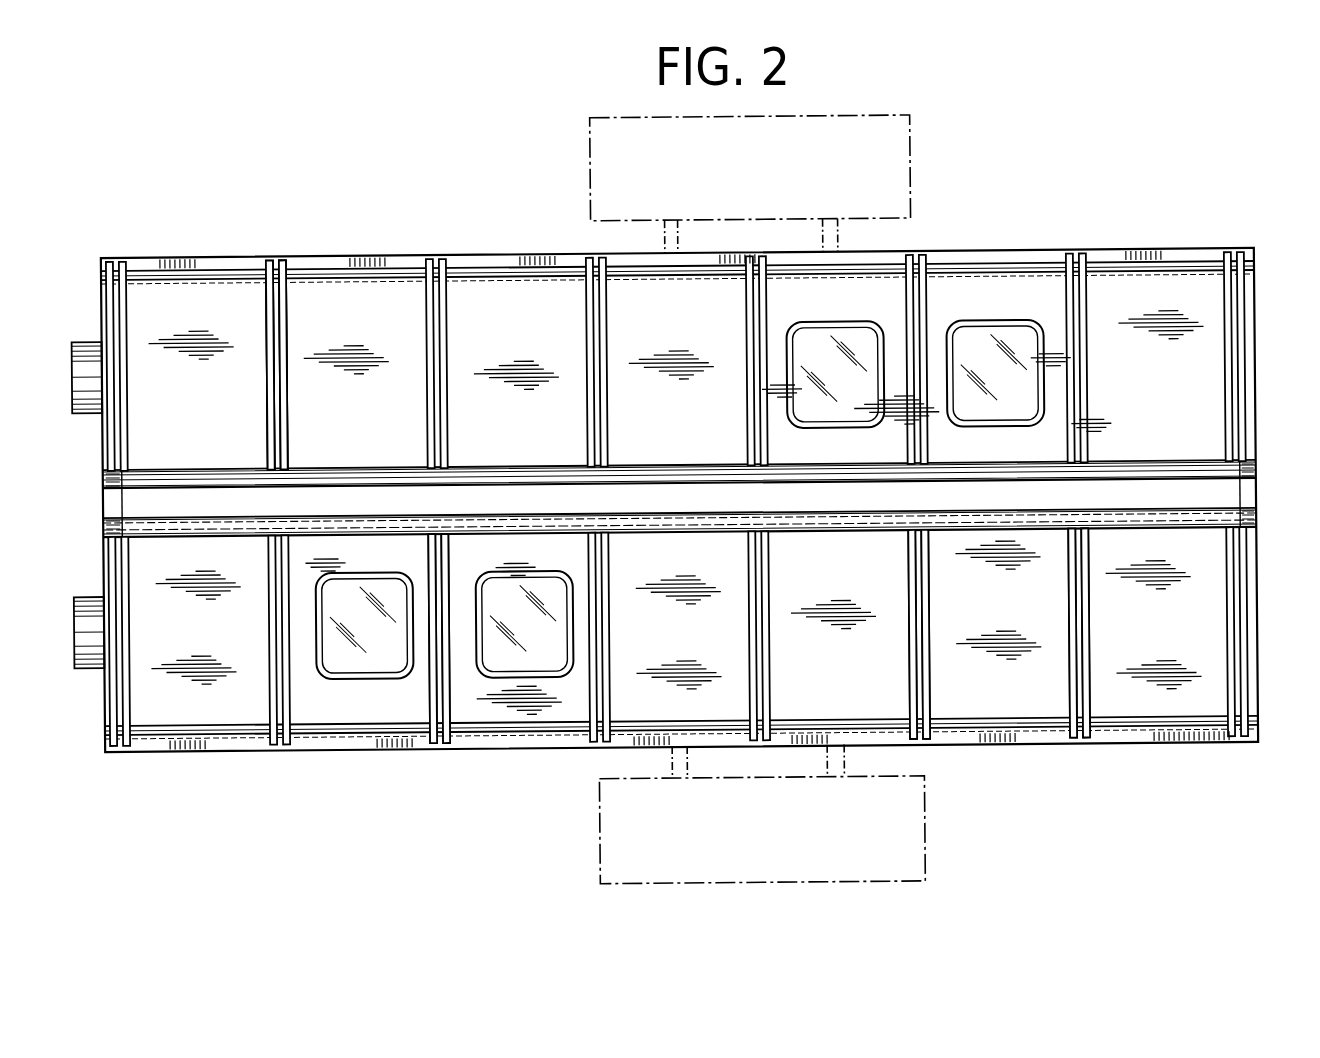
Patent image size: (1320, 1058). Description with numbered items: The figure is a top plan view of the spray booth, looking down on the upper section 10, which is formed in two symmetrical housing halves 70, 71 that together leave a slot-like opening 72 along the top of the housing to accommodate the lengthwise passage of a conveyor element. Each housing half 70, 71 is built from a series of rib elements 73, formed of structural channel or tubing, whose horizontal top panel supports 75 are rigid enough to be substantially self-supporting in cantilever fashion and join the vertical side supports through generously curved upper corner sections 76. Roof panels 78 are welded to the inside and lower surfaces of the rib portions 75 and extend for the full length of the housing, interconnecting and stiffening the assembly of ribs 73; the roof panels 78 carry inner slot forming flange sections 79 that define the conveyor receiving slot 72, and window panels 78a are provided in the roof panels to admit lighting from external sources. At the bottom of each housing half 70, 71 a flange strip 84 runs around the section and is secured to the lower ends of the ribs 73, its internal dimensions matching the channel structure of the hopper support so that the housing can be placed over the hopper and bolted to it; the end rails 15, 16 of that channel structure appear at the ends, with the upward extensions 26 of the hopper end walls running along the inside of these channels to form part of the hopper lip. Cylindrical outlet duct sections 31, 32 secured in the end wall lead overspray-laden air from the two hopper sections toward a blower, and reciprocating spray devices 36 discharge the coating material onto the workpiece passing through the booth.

The upper section 10 is at (382, 752).
The end rail 15 is at (108, 520).
The end rail 16 is at (1246, 490).
The upward extension 26 is at (110, 488).
The outlet duct section 31 is at (78, 385).
The outlet duct section 32 is at (95, 656).
The reciprocating spray device 36 is at (843, 232).
The housing half 70 is at (1122, 258).
The housing half 71 is at (1162, 733).
The slot-like opening 72 is at (688, 522).
The rib element 73 is at (292, 432).
The horizontal top panel support 75 is at (278, 382).
The curved upper corner section 76 is at (281, 258).
The roof panel 78 is at (1210, 582).
The window panel 78a is at (850, 332).
The slot forming flange section 79 is at (182, 530).
The flange strip 84 is at (487, 258).